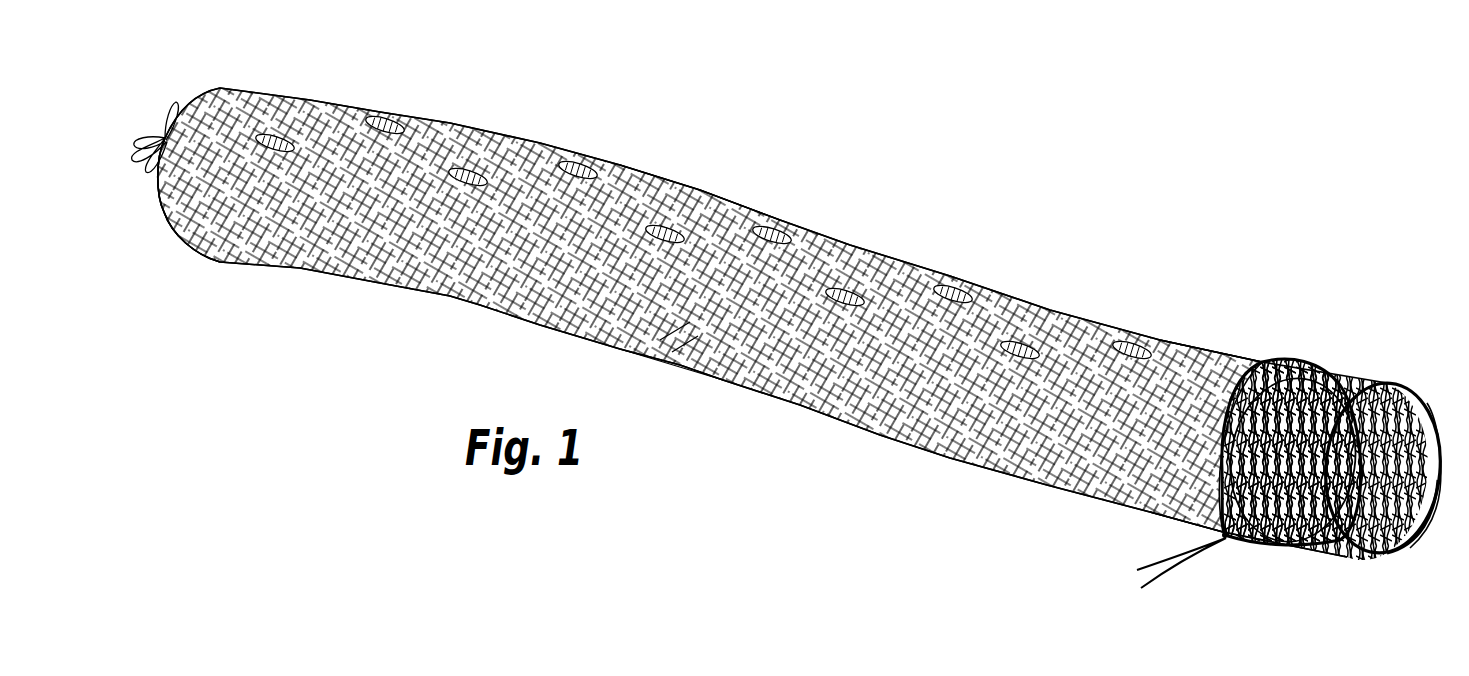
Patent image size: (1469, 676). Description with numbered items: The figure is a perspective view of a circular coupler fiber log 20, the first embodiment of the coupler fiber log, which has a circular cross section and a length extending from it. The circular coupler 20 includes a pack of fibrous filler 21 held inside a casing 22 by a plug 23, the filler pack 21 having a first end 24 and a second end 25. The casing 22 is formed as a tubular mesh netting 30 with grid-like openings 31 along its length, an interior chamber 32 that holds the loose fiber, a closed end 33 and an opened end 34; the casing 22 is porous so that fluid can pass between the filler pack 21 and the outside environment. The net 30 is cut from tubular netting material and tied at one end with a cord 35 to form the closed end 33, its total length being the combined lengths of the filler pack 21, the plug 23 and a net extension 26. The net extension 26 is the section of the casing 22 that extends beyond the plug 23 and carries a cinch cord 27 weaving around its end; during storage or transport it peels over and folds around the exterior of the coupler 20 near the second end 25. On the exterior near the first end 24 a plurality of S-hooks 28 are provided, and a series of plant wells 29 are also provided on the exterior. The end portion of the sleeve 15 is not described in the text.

The end portion of sleeve 15 is at (1210, 343).
The circular coupler fiber log 20 is at (973, 196).
The pack of fibrous filler 21 is at (700, 205).
The casing 22 is at (628, 165).
The plug 23 is at (1370, 380).
The first end 24 is at (195, 102).
The second end 25 is at (1270, 362).
The net extension 26 is at (1290, 547).
The cinch cord 27 is at (1140, 570).
The S-hooks 28 is at (290, 130).
The plant wells 29 is at (390, 115).
The tubular mesh netting 30 is at (835, 416).
The grid-like openings 31 is at (683, 333).
The interior chamber 32 is at (1403, 543).
The closed end 33 is at (157, 207).
The opened end 34 is at (1223, 537).
The cord 35 is at (138, 133).